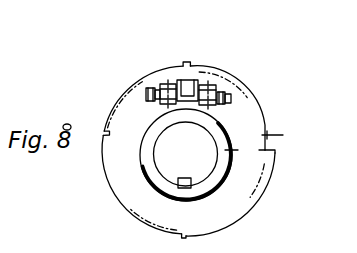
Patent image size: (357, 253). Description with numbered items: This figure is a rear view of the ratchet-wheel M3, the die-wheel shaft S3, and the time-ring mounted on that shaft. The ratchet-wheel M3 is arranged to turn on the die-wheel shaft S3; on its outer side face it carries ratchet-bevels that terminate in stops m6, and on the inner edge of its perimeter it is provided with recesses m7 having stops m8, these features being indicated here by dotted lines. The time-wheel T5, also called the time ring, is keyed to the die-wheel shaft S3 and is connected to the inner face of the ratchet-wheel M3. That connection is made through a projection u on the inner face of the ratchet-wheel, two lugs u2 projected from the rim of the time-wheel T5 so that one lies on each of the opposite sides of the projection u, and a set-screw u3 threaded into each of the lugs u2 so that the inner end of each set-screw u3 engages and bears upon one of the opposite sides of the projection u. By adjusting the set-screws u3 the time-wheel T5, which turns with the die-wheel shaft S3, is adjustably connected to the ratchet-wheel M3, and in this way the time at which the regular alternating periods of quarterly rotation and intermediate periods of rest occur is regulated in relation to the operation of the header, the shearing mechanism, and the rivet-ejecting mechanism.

The stops m6 is at (180, 67).
The recesses m7 is at (240, 80).
The stops m8 is at (210, 70).
The die-wheel shaft S3 is at (186, 155).
The projection u is at (189, 91).
The lugs u2 is at (188, 102).
The set-screw u3 is at (147, 90).
The time-wheel T5 is at (245, 149).
The ratchet-wheel M3 is at (283, 131).